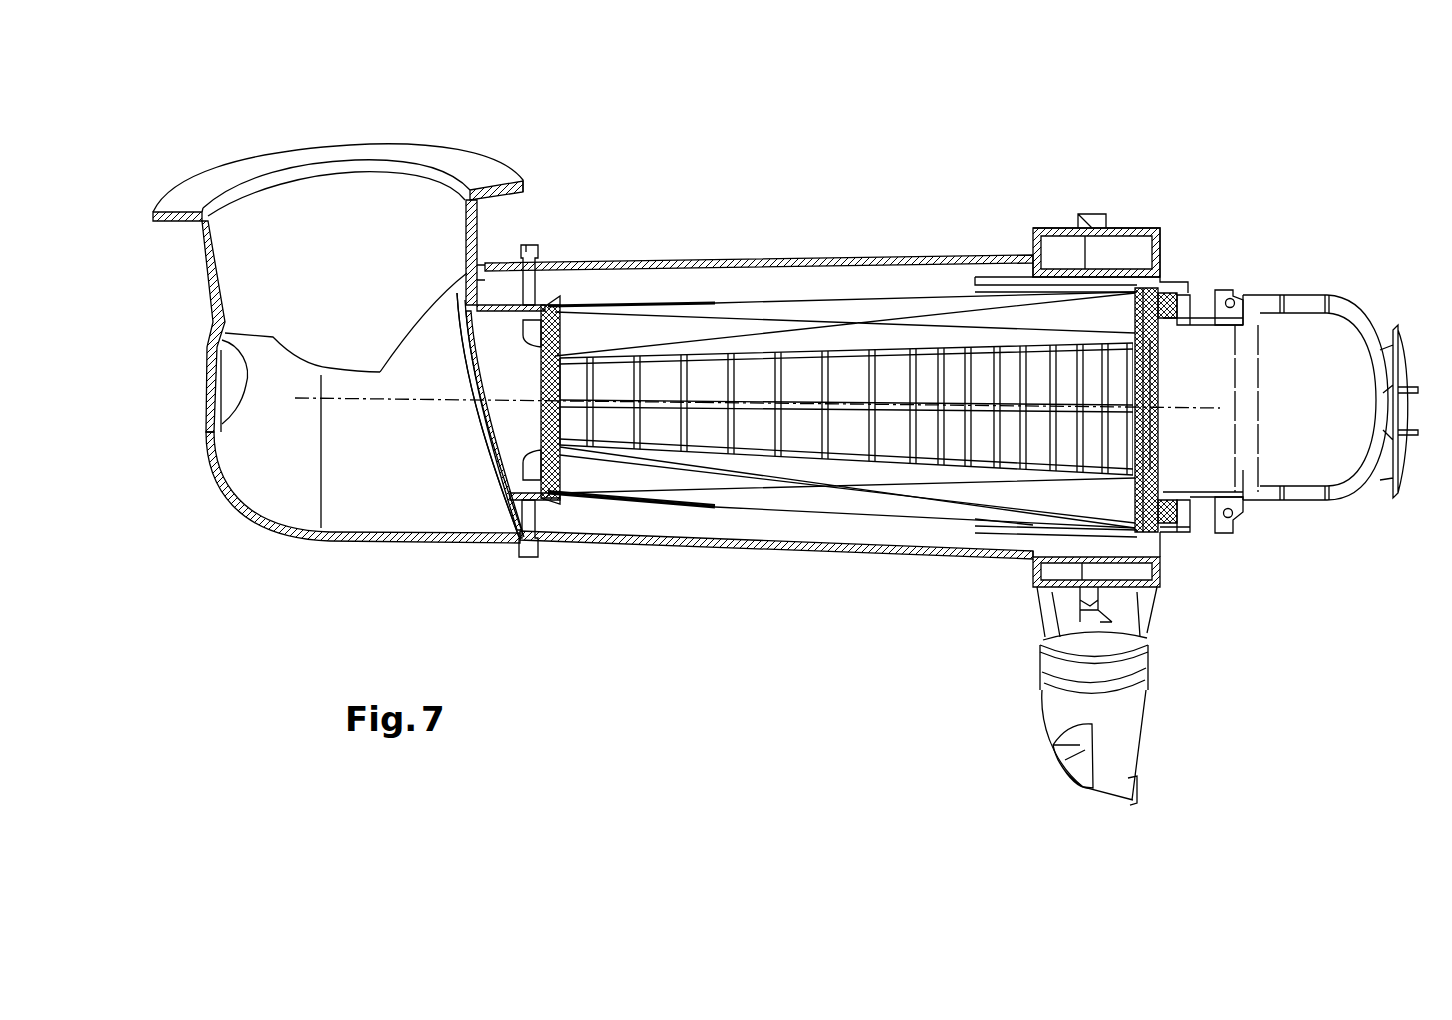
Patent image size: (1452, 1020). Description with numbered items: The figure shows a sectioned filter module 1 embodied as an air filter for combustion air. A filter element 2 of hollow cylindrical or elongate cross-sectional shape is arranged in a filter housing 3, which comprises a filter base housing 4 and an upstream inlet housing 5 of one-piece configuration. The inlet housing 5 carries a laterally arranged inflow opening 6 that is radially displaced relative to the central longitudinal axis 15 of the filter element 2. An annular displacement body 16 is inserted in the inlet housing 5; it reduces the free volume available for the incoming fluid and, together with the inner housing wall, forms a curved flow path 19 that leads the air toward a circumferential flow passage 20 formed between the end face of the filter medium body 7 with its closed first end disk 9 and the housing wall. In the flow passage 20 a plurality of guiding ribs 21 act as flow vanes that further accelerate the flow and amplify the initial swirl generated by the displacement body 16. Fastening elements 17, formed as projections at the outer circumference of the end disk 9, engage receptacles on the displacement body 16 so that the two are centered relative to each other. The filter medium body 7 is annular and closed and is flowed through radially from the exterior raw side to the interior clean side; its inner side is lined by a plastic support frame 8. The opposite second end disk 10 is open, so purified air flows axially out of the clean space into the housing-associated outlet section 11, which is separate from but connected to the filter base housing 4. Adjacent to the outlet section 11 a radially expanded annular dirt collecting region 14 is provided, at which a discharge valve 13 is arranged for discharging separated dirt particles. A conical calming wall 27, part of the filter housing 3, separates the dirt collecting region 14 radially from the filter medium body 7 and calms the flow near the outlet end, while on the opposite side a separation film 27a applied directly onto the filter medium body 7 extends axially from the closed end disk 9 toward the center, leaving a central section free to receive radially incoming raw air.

The filter module 1 is at (754, 110).
The filter element 2 is at (646, 296).
The filter housing 3 is at (712, 254).
The filter base housing 4 is at (780, 259).
The inlet housing 5 is at (208, 273).
The inflow opening 6 is at (395, 186).
The filter medium body 7 is at (762, 492).
The support frame 8 is at (816, 405).
The first end disk 9 is at (560, 490).
The second end disk 10 is at (1134, 307).
The outlet section 11 is at (1352, 502).
The discharge valve 13 is at (1130, 714).
The dirt collecting region 14 is at (1127, 582).
The central longitudinal axis 15 is at (426, 403).
The displacement body 16 is at (462, 345).
The fastening elements 17 is at (522, 333).
The flow path 19 is at (220, 380).
The flow passage 20 is at (510, 280).
The guiding ribs 21 is at (537, 283).
The calming wall 27 is at (987, 532).
The separation film 27a is at (703, 509).